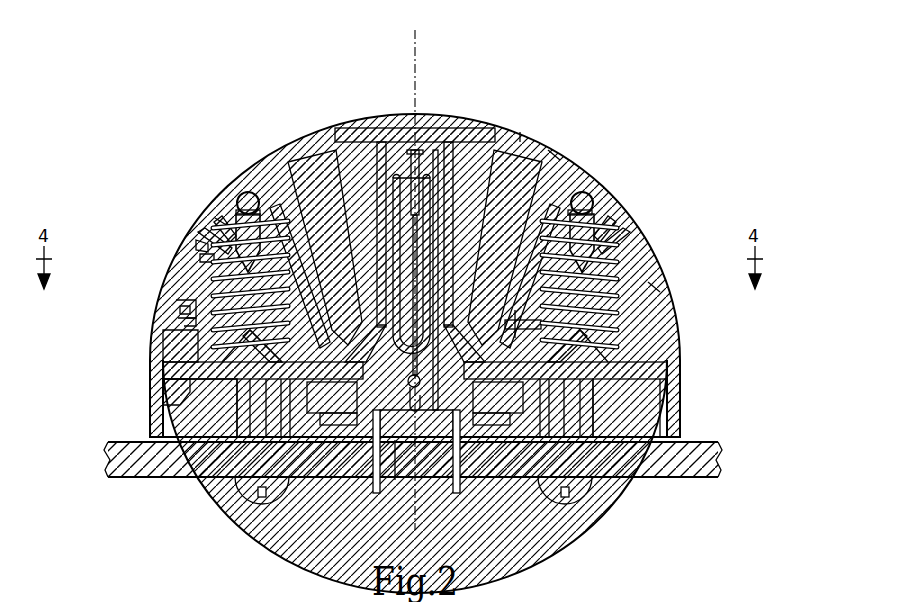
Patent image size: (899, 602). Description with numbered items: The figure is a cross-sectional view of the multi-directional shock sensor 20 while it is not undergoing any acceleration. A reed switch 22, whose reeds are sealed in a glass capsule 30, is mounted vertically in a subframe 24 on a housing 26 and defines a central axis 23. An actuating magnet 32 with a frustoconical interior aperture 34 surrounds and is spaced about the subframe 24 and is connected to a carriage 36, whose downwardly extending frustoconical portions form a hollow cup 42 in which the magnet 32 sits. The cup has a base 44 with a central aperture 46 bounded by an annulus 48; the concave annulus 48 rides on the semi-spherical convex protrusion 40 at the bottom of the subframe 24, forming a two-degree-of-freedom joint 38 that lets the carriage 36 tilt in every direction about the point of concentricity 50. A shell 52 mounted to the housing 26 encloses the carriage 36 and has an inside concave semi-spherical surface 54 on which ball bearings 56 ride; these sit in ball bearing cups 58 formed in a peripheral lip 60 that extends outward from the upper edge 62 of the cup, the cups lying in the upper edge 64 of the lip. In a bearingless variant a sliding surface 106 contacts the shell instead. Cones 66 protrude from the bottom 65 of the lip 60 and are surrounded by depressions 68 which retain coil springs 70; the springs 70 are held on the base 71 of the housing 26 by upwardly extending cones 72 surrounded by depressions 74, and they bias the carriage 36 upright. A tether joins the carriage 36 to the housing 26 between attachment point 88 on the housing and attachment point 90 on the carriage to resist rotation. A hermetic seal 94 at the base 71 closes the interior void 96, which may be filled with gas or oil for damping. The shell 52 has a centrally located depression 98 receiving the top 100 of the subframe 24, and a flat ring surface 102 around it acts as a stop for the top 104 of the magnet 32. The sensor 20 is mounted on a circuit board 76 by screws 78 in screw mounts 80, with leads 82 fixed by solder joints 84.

The shock sensor 20 is at (690, 214).
The reed switch 22 is at (372, 244).
The axis 23 is at (410, 42).
The subframe 24 is at (324, 122).
The housing 26 is at (672, 414).
The glass capsule 30 is at (388, 126).
The actuating magnet 32 is at (556, 152).
The frustoconical interior aperture 34 is at (542, 178).
The carriage 36 is at (226, 200).
The two-degree-of-freedom joint 38 is at (395, 480).
The semi-spherical convex protrusion 40 is at (462, 492).
The hollow cup 42 is at (614, 300).
The base 44 is at (330, 352).
The central aperture 46 is at (562, 478).
The annulus 48 is at (482, 314).
The point of concentricity 50 is at (436, 470).
The shell 52 is at (176, 316).
The inside concave semi-spherical surface 54 is at (592, 192).
The ball bearings 56 is at (240, 208).
The ball bearing cups 58 is at (630, 230).
The peripheral lip 60 is at (248, 192).
The upper edge 62 is at (258, 205).
The upper edge 64 is at (222, 212).
The bottom 65 is at (200, 238).
The cones 66 is at (206, 288).
The depressions 68 is at (200, 256).
The coil springs 70 is at (650, 286).
The base 71 is at (166, 356).
The cones 72 is at (228, 386).
The depressions 74 is at (198, 386).
The circuit board 76 is at (692, 480).
The screws 78 is at (268, 500).
The screw mounts 80 is at (292, 480).
The leads 82 is at (372, 482).
The solder joints 84 is at (376, 496).
The attachment point 88 is at (178, 300).
The attachment point 90 is at (612, 336).
The hermetic seal 94 is at (668, 360).
The interior void 96 is at (186, 298).
The centrally located depression 98 is at (425, 126).
The top 100 is at (446, 126).
The flat ring surface 102 is at (366, 124).
The top 104 is at (522, 132).
The surface 106 is at (614, 222).